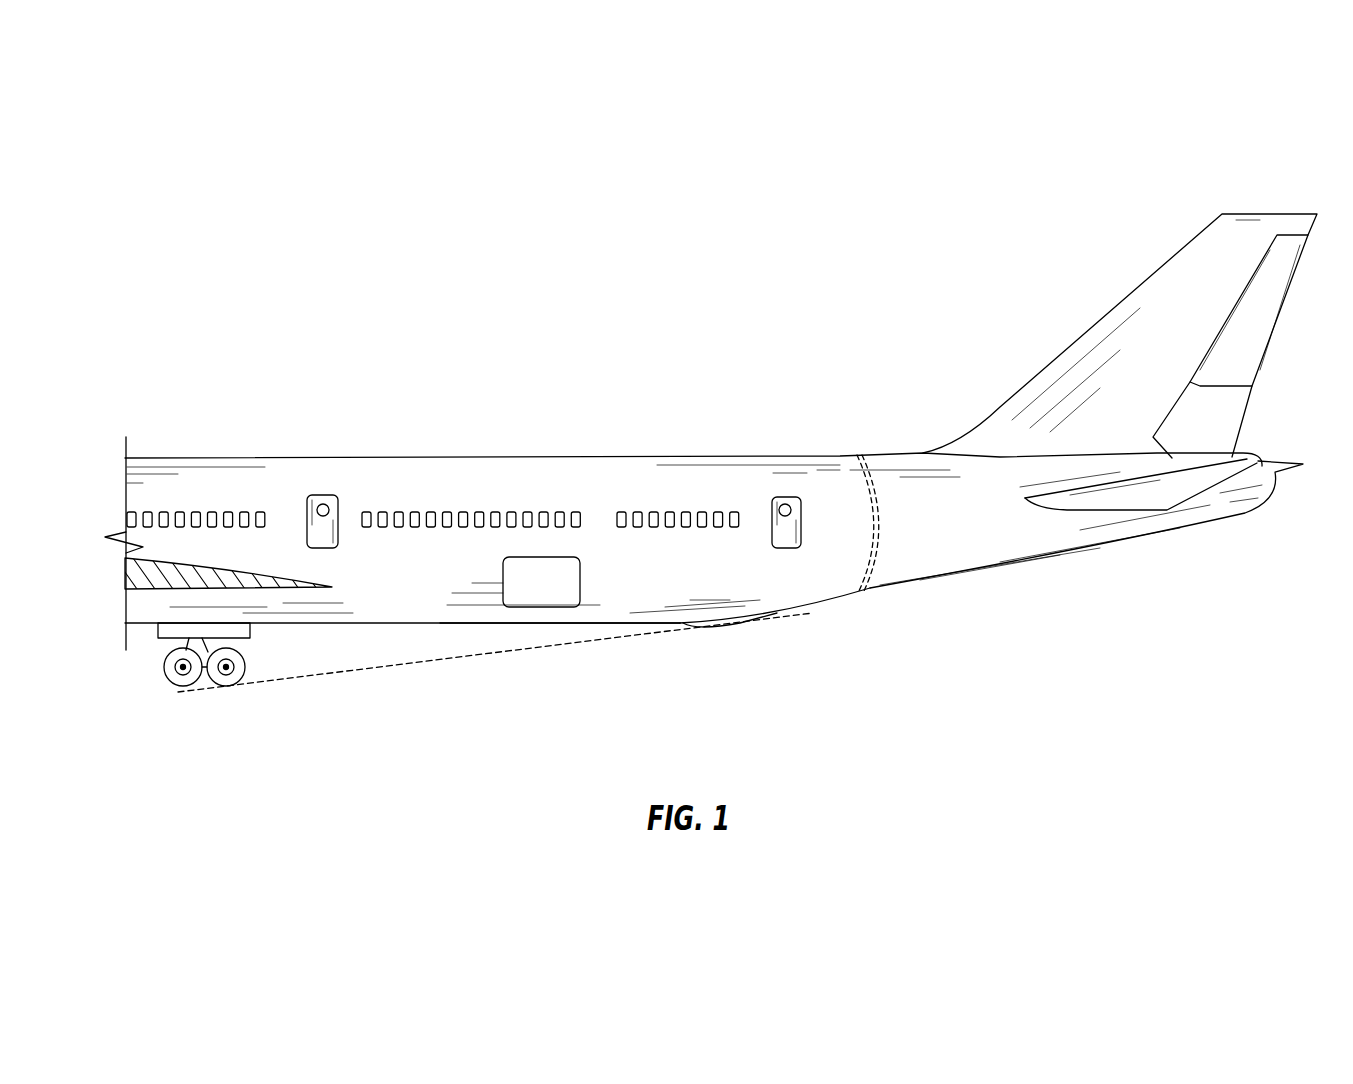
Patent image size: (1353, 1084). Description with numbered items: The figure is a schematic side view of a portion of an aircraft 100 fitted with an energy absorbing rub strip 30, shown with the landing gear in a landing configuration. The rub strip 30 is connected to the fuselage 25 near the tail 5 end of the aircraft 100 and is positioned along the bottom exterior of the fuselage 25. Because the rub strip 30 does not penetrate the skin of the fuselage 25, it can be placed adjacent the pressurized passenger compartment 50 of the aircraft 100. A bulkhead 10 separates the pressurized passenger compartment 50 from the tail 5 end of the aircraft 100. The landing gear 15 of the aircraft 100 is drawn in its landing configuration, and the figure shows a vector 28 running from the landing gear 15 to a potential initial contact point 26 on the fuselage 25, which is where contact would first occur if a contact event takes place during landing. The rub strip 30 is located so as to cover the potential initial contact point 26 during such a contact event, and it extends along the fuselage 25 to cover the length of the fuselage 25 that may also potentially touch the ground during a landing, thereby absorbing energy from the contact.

The aircraft 100 is at (293, 458).
The tail 5 is at (1160, 262).
The bulkhead 10 is at (880, 527).
The passenger compartment 50 is at (425, 485).
The landing gear 15 is at (152, 673).
The vector 28 is at (412, 663).
The fuselage 25 is at (508, 624).
The potential initial contact point 26 is at (692, 628).
The energy absorbing rub strip 30 is at (745, 630).